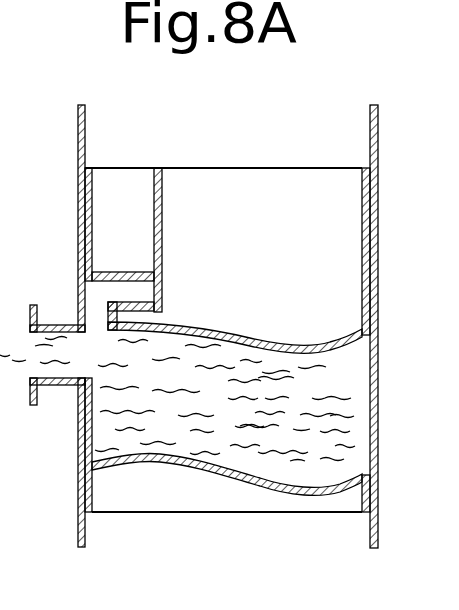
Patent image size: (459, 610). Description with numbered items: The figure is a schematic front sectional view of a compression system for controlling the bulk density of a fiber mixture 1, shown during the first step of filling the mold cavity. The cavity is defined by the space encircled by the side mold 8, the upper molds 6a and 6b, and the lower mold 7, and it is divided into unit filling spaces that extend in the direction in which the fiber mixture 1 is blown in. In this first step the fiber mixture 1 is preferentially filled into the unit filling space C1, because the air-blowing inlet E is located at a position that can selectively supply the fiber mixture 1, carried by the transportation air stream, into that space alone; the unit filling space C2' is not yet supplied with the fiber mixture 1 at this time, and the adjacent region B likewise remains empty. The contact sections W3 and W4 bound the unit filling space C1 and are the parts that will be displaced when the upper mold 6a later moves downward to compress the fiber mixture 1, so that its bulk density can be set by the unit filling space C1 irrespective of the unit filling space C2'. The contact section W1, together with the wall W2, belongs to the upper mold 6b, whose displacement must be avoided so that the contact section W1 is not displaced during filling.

The fiber mixture 1 is at (342, 385).
The upper mold 6a is at (277, 218).
The upper mold 6b is at (125, 210).
The lower mold 7 is at (333, 501).
The side mold 8 is at (375, 409).
The cavity B is at (96, 297).
The unit filling space C1 is at (93, 432).
The unit filling space C2' is at (51, 273).
The air-blowing inlet E is at (40, 350).
The contact section W1 is at (128, 270).
The wall W2 is at (130, 300).
The contact section W3 is at (280, 343).
The contact section W4 is at (298, 478).